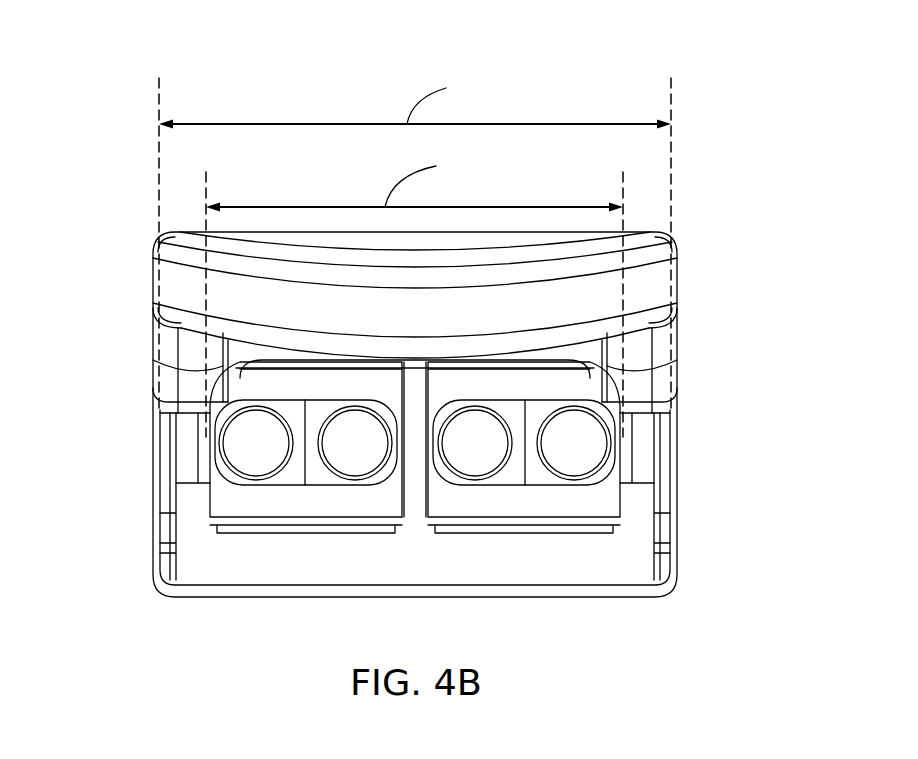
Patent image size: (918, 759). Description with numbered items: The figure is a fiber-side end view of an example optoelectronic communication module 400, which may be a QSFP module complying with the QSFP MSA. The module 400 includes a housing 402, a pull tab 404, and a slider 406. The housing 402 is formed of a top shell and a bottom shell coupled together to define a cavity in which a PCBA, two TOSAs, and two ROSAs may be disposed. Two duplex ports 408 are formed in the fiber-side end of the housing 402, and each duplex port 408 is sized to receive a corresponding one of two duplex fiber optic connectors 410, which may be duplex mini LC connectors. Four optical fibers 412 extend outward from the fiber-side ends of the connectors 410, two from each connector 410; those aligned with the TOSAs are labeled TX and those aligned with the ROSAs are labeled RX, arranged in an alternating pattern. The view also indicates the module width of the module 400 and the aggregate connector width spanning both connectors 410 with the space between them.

The optoelectronic communication module 400 is at (258, 64).
The housing 402 is at (223, 567).
The pull tab 404 is at (153, 297).
The slider 406 is at (672, 537).
The duplex ports 408 is at (294, 552).
The duplex fiber optic connectors 410 is at (205, 500).
The optical fibers 412 is at (278, 472).